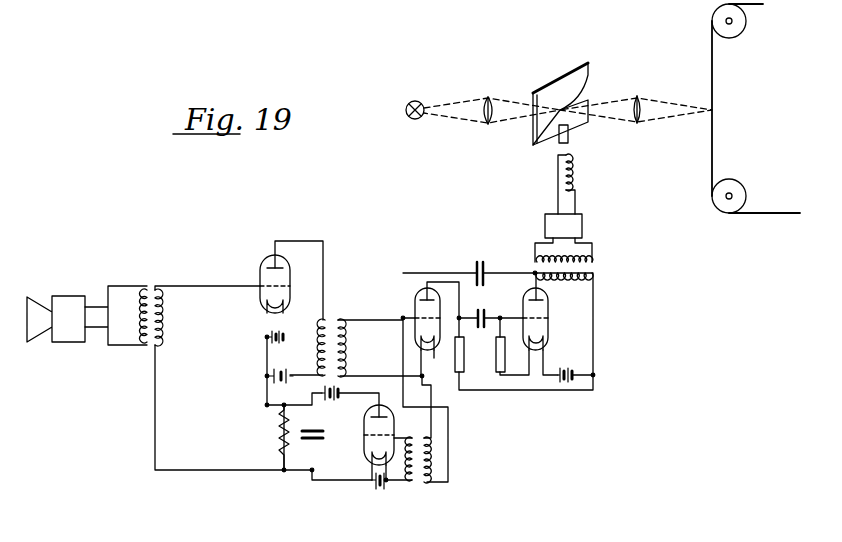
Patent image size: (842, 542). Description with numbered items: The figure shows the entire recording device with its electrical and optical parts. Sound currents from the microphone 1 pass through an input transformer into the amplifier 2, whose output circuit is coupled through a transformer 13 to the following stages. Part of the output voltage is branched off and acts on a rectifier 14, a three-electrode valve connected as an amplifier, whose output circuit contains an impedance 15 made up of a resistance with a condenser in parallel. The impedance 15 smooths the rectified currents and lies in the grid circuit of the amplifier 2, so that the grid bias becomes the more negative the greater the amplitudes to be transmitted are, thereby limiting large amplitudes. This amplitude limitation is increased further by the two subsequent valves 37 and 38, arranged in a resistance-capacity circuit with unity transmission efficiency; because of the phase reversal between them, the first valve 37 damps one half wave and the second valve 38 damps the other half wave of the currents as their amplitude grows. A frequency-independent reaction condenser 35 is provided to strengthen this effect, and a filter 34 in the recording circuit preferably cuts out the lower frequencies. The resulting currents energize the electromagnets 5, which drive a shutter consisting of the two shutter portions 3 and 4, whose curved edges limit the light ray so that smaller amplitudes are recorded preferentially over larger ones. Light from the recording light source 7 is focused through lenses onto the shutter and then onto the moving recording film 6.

The microphone 1 is at (56, 319).
The amplifier 2 is at (258, 272).
The shutter portion 3 is at (563, 82).
The shutter portion 4 is at (578, 115).
The electromagnets 5 is at (572, 175).
The recording film 6 is at (714, 141).
The recording light source 7 is at (418, 101).
The transformer 13 is at (330, 350).
The rectifier 14 is at (366, 423).
The impedance 15 is at (280, 430).
The filter 34 is at (564, 247).
The reaction condenser 35 is at (480, 262).
The valve 37 is at (416, 304).
The valve 38 is at (545, 307).